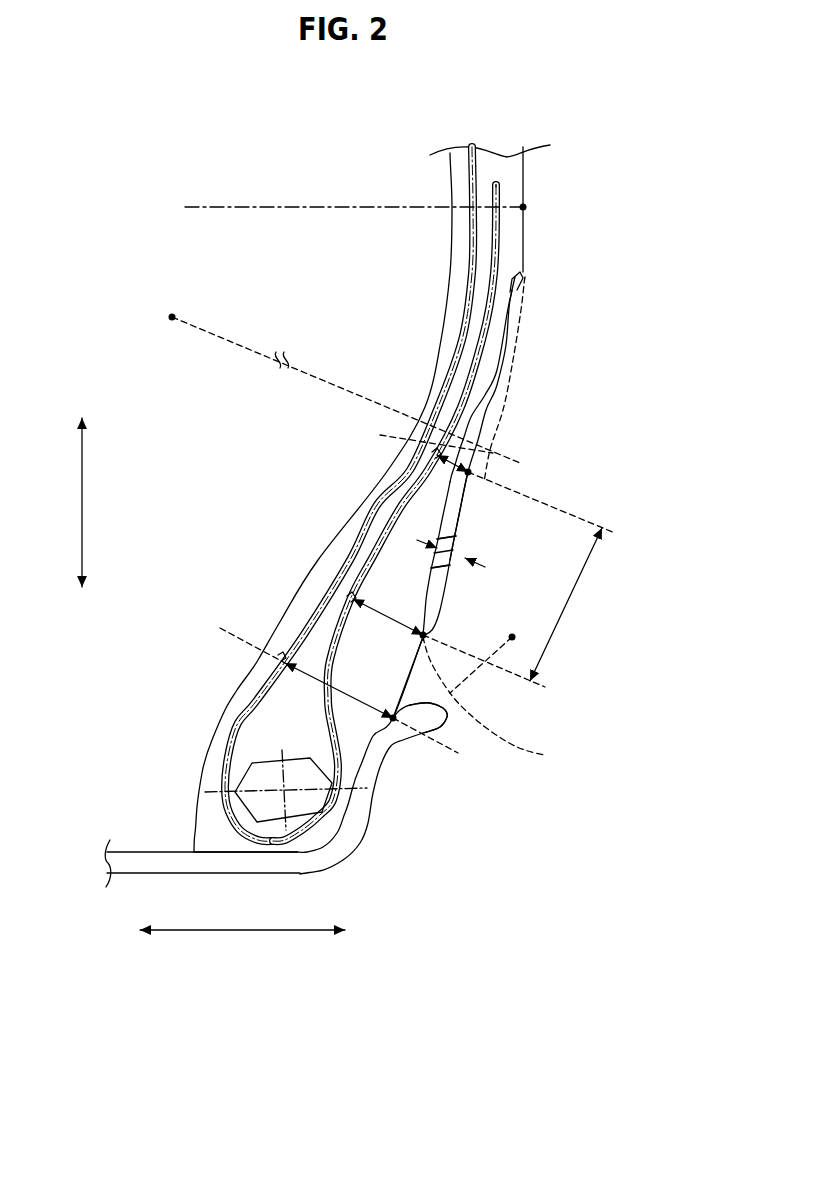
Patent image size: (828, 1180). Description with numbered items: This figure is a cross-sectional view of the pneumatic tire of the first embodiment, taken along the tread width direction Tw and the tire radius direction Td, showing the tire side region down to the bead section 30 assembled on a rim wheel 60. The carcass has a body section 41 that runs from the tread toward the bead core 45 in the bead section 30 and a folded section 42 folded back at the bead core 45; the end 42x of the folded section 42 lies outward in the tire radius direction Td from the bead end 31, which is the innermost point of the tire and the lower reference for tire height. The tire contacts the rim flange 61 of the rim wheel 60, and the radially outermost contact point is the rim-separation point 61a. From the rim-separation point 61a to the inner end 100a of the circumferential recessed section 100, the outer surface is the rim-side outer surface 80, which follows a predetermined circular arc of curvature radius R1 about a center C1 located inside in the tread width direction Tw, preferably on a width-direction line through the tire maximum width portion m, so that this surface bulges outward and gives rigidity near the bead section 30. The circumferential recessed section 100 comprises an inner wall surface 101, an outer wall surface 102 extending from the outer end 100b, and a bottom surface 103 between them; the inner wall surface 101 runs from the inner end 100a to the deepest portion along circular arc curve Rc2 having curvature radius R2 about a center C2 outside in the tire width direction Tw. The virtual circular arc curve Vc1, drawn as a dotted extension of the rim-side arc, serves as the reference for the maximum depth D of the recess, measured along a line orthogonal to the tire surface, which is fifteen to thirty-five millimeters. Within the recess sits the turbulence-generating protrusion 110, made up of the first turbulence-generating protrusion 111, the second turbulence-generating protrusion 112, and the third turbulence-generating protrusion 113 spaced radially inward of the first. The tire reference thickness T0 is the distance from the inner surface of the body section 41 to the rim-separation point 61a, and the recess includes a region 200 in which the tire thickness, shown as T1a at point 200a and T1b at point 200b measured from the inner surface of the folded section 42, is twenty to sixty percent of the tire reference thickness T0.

The bead section 30 is at (358, 767).
The bead end 31 is at (292, 857).
The body section 41 is at (468, 258).
The folded section 42 is at (500, 268).
The end of the folded section 42x is at (497, 181).
The bead core 45 is at (268, 772).
The rim wheel 60 is at (150, 878).
The rim flange 61 is at (355, 863).
The rim-separation point 61a is at (408, 741).
The rim-side outer surface 80 is at (420, 686).
The circumferential recessed section 100 is at (504, 370).
The inner end 100a is at (423, 644).
The outer end 100b is at (522, 273).
The inner wall surface 101 is at (418, 626).
The outer wall surface 102 is at (510, 273).
The bottom surface 103 is at (460, 432).
The turbulence-generating protrusion 110 is at (537, 534).
The first turbulence-generating protrusion 111 is at (478, 500).
The second turbulence-generating protrusion 112 is at (462, 522).
The third turbulence-generating protrusion 113 is at (433, 583).
The region 200 is at (519, 579).
The point 200a is at (420, 632).
The point 200b is at (470, 471).
The tire maximum width portion m is at (527, 207).
The center of curvature radius R1 C1 is at (172, 313).
The curvature radius R1 is at (238, 350).
The virtual circular arc curve Vc1 is at (527, 297).
The center of curvature radius R2 C2 is at (494, 629).
The curvature radius R2 is at (478, 668).
The circular arc curve Rc2 is at (520, 745).
The tire reference thickness T0 is at (318, 662).
The tire thickness T1a is at (385, 616).
The tire thickness T1b is at (436, 455).
The maximum depth D is at (459, 554).
The tire radius direction Td is at (64, 502).
The tread width direction Tw is at (242, 914).